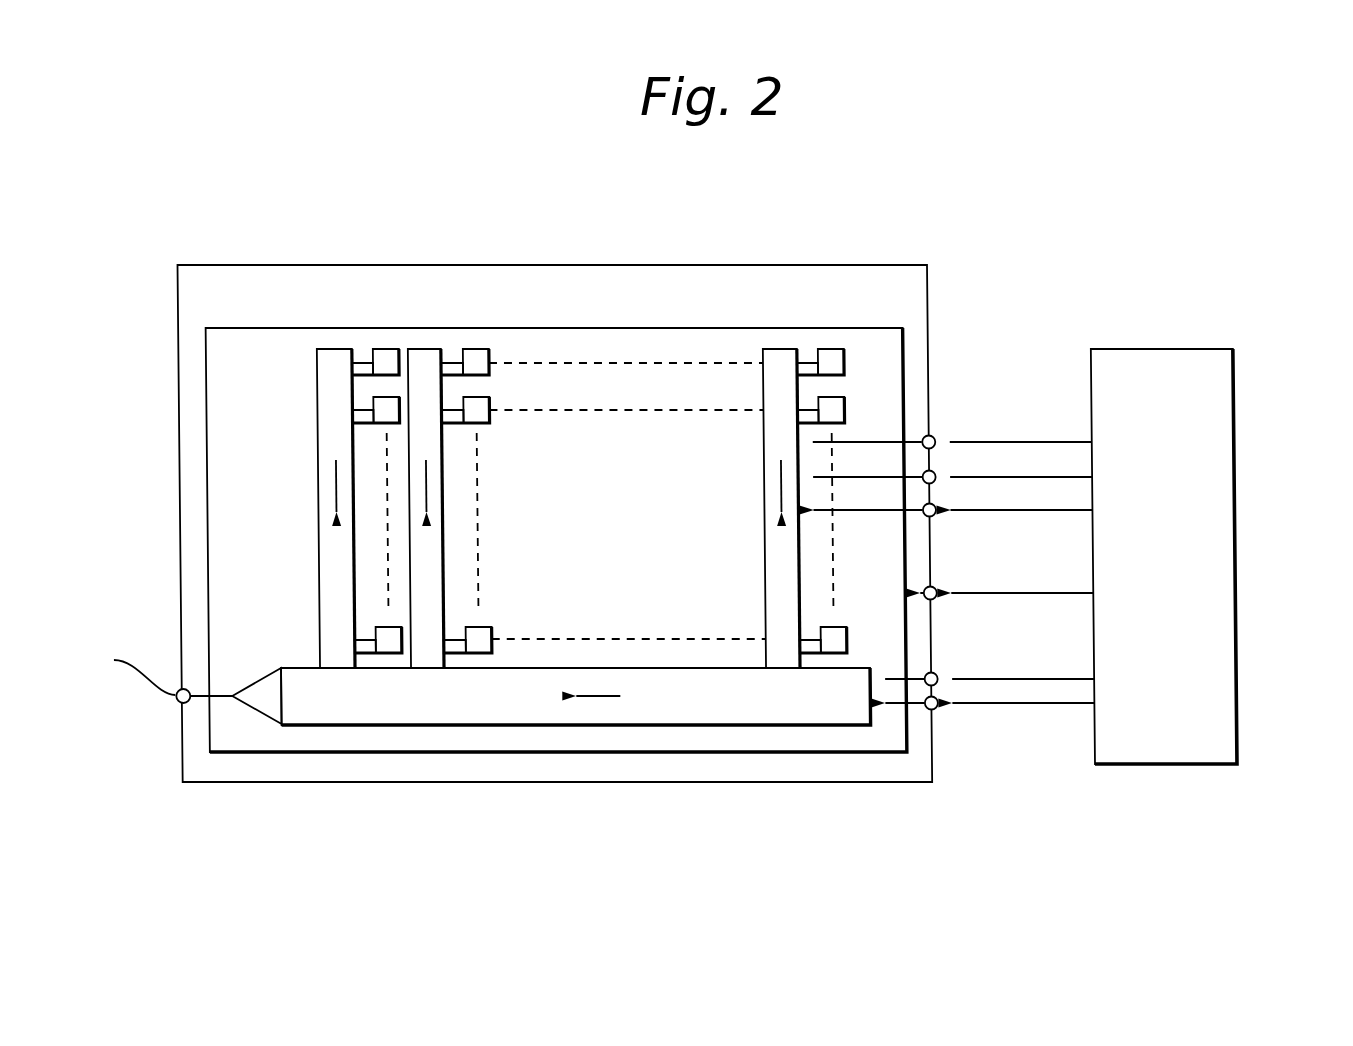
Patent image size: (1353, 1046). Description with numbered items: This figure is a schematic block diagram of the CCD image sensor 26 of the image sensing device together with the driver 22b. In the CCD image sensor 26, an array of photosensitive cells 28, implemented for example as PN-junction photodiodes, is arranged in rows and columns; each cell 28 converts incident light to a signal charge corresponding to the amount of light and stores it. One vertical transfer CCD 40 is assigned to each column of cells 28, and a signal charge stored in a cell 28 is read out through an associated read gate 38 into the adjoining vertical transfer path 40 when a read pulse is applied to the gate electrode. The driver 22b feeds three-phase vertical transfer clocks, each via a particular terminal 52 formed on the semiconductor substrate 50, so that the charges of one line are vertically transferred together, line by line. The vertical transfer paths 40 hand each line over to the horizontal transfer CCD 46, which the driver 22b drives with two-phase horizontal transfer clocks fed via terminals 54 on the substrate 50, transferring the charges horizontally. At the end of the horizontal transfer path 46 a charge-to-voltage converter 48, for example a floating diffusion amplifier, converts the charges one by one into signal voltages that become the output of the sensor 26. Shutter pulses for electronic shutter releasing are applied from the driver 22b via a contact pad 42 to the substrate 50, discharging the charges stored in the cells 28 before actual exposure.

The CCD image sensor 26 is at (927, 294).
The semiconductor substrate 50 is at (903, 372).
The vertical transfer CCD 40 is at (333, 349).
The read gate 38 is at (448, 349).
The photosensitive cell 28 is at (830, 349).
The horizontal transfer CCD 46 is at (415, 725).
The charge-to-voltage converter 48 is at (268, 717).
The terminal 52 is at (934, 440).
The contact pad 42 is at (934, 592).
The terminal 54 is at (934, 678).
The driver 22b is at (1234, 413).